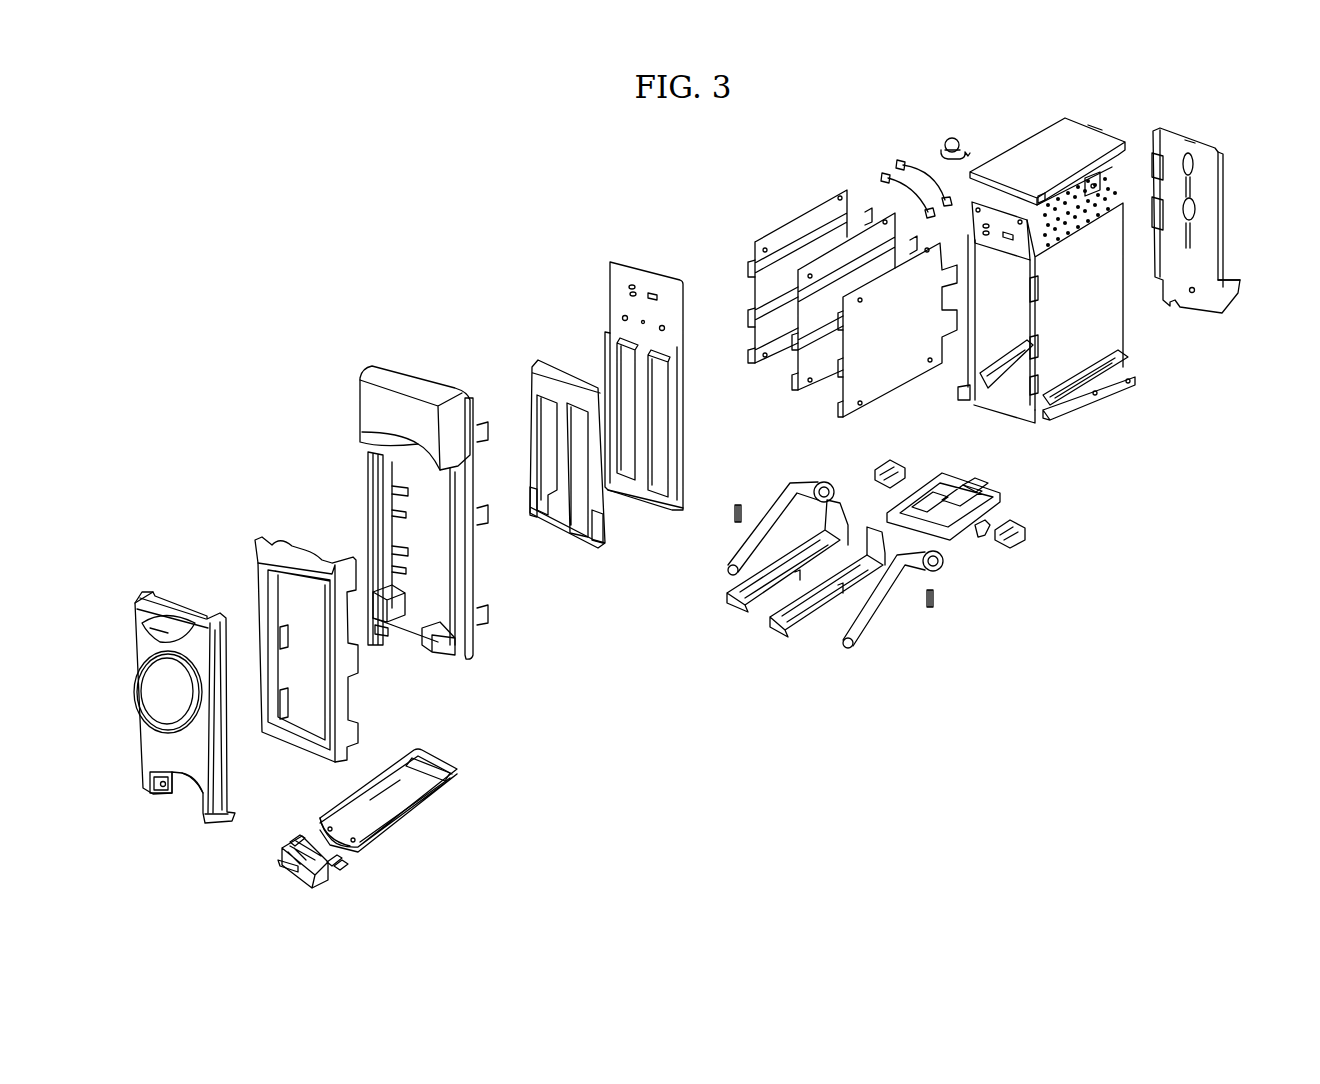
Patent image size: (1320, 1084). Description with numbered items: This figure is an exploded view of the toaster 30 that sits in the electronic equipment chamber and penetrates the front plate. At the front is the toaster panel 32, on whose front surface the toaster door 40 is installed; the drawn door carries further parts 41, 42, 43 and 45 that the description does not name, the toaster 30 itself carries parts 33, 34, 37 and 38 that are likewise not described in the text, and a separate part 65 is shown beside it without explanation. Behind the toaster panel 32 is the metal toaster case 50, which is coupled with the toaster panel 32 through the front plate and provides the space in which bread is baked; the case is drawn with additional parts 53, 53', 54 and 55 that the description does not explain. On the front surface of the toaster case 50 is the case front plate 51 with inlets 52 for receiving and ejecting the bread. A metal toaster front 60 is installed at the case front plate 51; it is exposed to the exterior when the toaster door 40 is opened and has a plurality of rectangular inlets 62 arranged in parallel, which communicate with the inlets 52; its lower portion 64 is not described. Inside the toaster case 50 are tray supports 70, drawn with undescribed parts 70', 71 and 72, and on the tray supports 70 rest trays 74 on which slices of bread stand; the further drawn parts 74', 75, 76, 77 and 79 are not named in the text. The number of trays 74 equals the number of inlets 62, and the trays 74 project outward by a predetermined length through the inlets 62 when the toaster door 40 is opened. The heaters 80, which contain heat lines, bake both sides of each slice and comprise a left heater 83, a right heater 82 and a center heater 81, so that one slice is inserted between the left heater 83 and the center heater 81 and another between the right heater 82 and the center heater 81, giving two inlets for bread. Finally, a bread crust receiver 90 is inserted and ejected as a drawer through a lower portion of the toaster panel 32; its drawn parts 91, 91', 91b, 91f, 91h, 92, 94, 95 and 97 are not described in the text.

The toaster 30 is at (452, 334).
The toaster panel 32 is at (405, 378).
The hook tabs 33 is at (483, 520).
The lower block 34 is at (455, 650).
The bottom bracket 37 is at (452, 630).
The bottom tab 38 is at (418, 640).
The toaster door 40 is at (140, 586).
The side rib 41 is at (222, 640).
The lower tab 42 is at (170, 793).
The lens ring 43 is at (167, 633).
The arched cutout 45 is at (193, 802).
The toaster case 50 is at (1075, 270).
The case front plate 51 is at (617, 386).
The inlets 52 is at (657, 395).
The side cover 53 is at (1223, 251).
The side cover flange 53' is at (1248, 327).
The guide rails 54 is at (1080, 372).
The bottom slot 55 is at (1100, 368).
The toaster front 60 is at (539, 448).
The inlets 62 is at (547, 417).
The frame foot 64 is at (592, 528).
The inner frame 65 is at (288, 553).
The tray supports 70 is at (983, 491).
The bracket tab 70' is at (989, 467).
The clip 71 is at (990, 525).
The connector 72 is at (1017, 530).
The trays 74 is at (787, 597).
The second rail 74' is at (827, 582).
The rail bracket 75 is at (868, 522).
The lever arm 76 is at (858, 628).
The pivot 77 is at (817, 480).
The spring 79 is at (738, 522).
The heaters 80 is at (806, 288).
The center heater 81 is at (872, 240).
The right heater 82 is at (890, 370).
The left heater 83 is at (792, 233).
The bread crust receiver 90 is at (378, 840).
The cover frame 91 is at (419, 807).
The cover face 91' is at (394, 786).
The cover edge 91b is at (447, 788).
The cover flange 91f is at (427, 798).
The cover end 91h is at (345, 845).
The housing 92 is at (313, 882).
The pins 94 is at (297, 840).
The latch 95 is at (342, 868).
The tab 97 is at (283, 863).